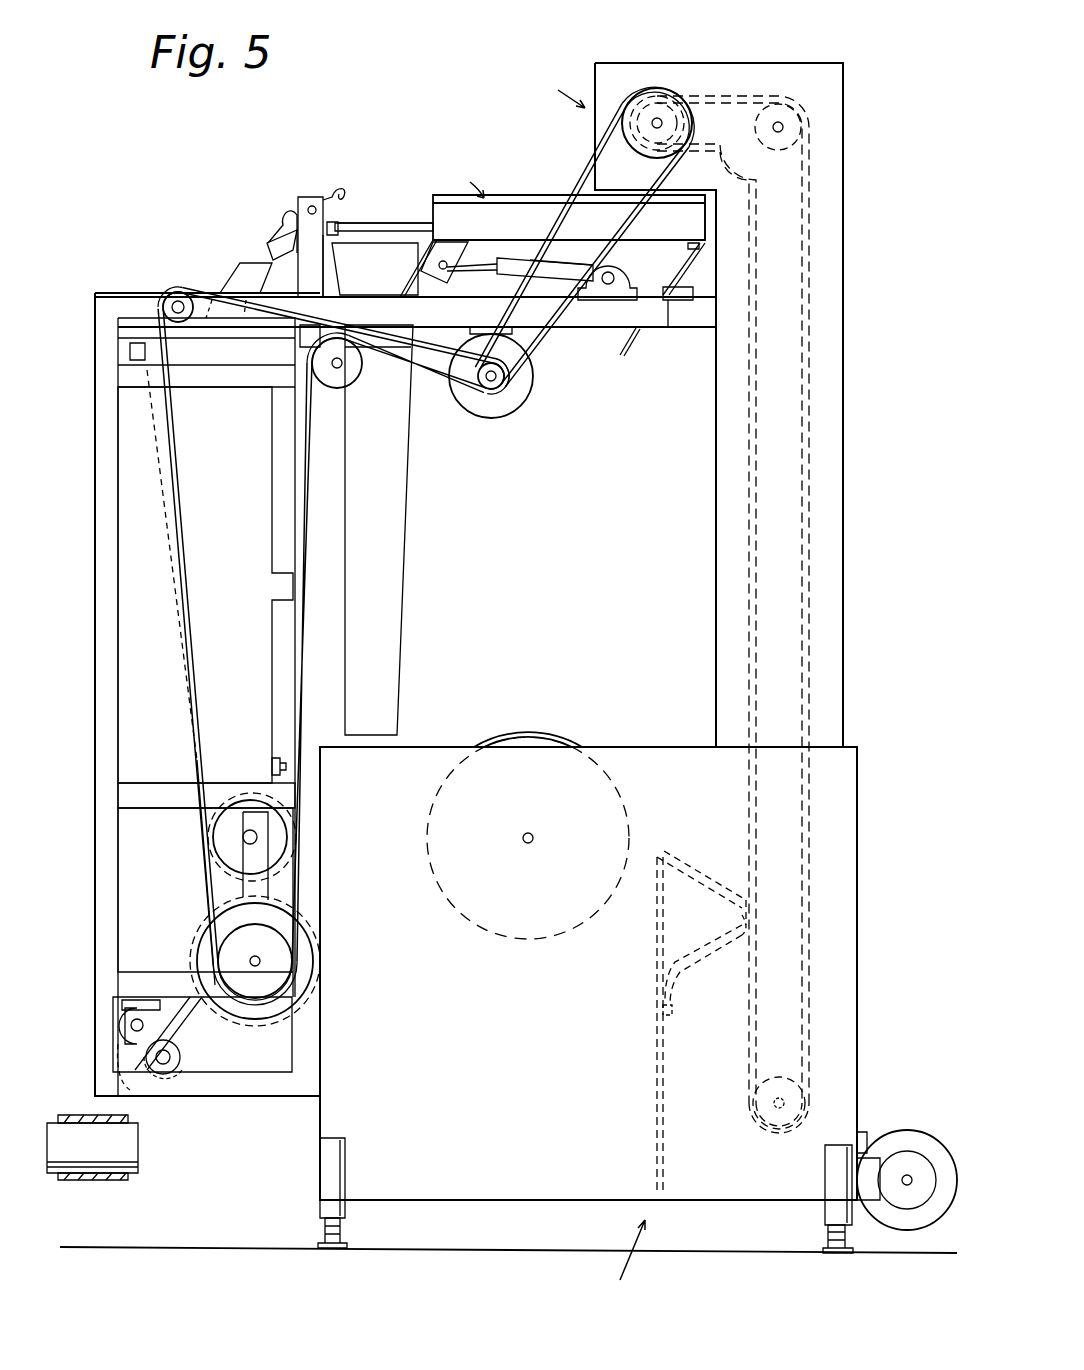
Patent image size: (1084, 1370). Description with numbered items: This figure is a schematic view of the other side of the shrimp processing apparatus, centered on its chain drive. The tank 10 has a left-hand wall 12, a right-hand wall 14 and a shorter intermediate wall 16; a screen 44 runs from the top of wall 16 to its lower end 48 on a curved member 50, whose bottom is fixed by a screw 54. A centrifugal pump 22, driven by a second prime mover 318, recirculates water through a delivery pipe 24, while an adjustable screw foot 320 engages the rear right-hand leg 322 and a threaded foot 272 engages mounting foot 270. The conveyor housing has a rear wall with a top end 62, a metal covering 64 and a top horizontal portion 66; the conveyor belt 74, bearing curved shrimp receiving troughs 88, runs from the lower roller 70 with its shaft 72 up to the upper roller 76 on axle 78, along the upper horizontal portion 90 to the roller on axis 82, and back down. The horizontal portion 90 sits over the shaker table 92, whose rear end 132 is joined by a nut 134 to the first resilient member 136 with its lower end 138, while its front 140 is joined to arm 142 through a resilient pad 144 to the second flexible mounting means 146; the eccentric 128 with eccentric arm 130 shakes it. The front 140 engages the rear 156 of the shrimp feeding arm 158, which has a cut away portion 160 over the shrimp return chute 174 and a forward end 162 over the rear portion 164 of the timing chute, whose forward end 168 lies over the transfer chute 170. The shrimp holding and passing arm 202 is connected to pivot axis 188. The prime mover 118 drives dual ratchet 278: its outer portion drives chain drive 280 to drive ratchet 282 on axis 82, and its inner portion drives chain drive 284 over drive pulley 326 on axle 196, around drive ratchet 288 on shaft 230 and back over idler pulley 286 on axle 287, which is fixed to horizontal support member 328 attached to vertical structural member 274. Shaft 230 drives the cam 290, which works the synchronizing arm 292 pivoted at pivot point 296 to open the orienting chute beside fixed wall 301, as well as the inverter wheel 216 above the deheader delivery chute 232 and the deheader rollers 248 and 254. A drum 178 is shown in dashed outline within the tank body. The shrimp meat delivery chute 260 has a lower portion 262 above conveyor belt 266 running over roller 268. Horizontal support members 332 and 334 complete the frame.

The tank 10 is at (617, 1262).
The left-hand wall 12 is at (860, 1035).
The right-hand wall 14 is at (318, 1118).
The intermediate wall 16 is at (655, 1126).
The centrifugal pump 22 is at (915, 1140).
The delivery pipe 24 is at (862, 1133).
The screen 44 is at (693, 862).
The lower end of screen 48 is at (718, 913).
The curved member 50 is at (720, 942).
The screw 54 is at (673, 1012).
The top end of rear wall 62 is at (848, 63).
The metal covering 64 is at (845, 365).
The top horizontal portion 66 is at (714, 63).
The lower roller 70 is at (800, 1110).
The lower pulley shaft 72 is at (773, 1103).
The conveyor belt 74 is at (812, 462).
The upper roller 76 is at (795, 118).
The axle 78 is at (786, 130).
The axis 82 is at (653, 128).
The shrimp receiving troughs 88 is at (812, 535).
The upper horizontal portion 90 is at (559, 91).
The shaker table 92 is at (468, 174).
The prime mover 118 is at (505, 400).
The eccentric 128 is at (607, 313).
The eccentric arm 130 is at (545, 262).
The rear end of shaker table 132 is at (693, 226).
The nut 134 is at (694, 250).
The first resilient member 136 is at (668, 262).
The lower end of resilient member 138 is at (690, 312).
The front of shaker tray 140 is at (480, 226).
The arm 142 is at (462, 245).
The resilient pad 144 is at (442, 276).
The second flexible mounting means 146 is at (399, 283).
The rear of shrimp feeding arm 156 is at (402, 222).
The shrimp feeding arm 158 is at (388, 222).
The cut away portion 160 is at (350, 220).
The forward end of shrimp feeding arm 162 is at (342, 190).
The rear portion of shrimp timing chute 164 is at (338, 244).
The forward end of shrimp timing chute 168 is at (266, 250).
The transfer chute 170 is at (237, 272).
The shrimp return chute 174 is at (388, 557).
The drum 178 is at (540, 740).
The pivot axis 188 is at (311, 198).
The axle 196 is at (340, 365).
The shrimp holding and passing arm 202 is at (283, 224).
The shrimp longitudinal position inverter wheel 216 is at (280, 832).
The shaft 230 is at (262, 962).
The deheader delivery chute 232 is at (188, 1003).
The first deheader rubber roller 248 is at (181, 1057).
The second deheader roller 254 is at (143, 1000).
The shrimp meat delivery chute 260 is at (122, 1040).
The lower portion of tail meat chute 262 is at (108, 1074).
The conveyor belt 266 is at (108, 1182).
The roller 268 is at (130, 1152).
The mounting foot 270 is at (330, 1180).
The threaded foot 272 is at (325, 1235).
The structural member 274 is at (112, 832).
The dual ratchet 278 is at (490, 386).
The chain drive 280 is at (582, 185).
The drive ratchet 282 is at (657, 88).
The chain drive 284 is at (433, 388).
The idler pulley 286 is at (162, 300).
The axle 287 is at (178, 300).
The drive ratchet 288 is at (277, 976).
The cam 290 is at (280, 922).
The synchronizing arm 292 is at (274, 846).
The pivot point 296 is at (287, 766).
The fixed wall 301 is at (235, 474).
The second prime mover 318 is at (912, 1200).
The adjustable screw foot 320 is at (830, 1240).
The rear right-hand leg 322 is at (835, 1176).
The drive pulley 326 is at (320, 366).
The horizontal support member 328 is at (108, 295).
The horizontal support member 332 is at (213, 1090).
The horizontal support member 334 is at (147, 795).